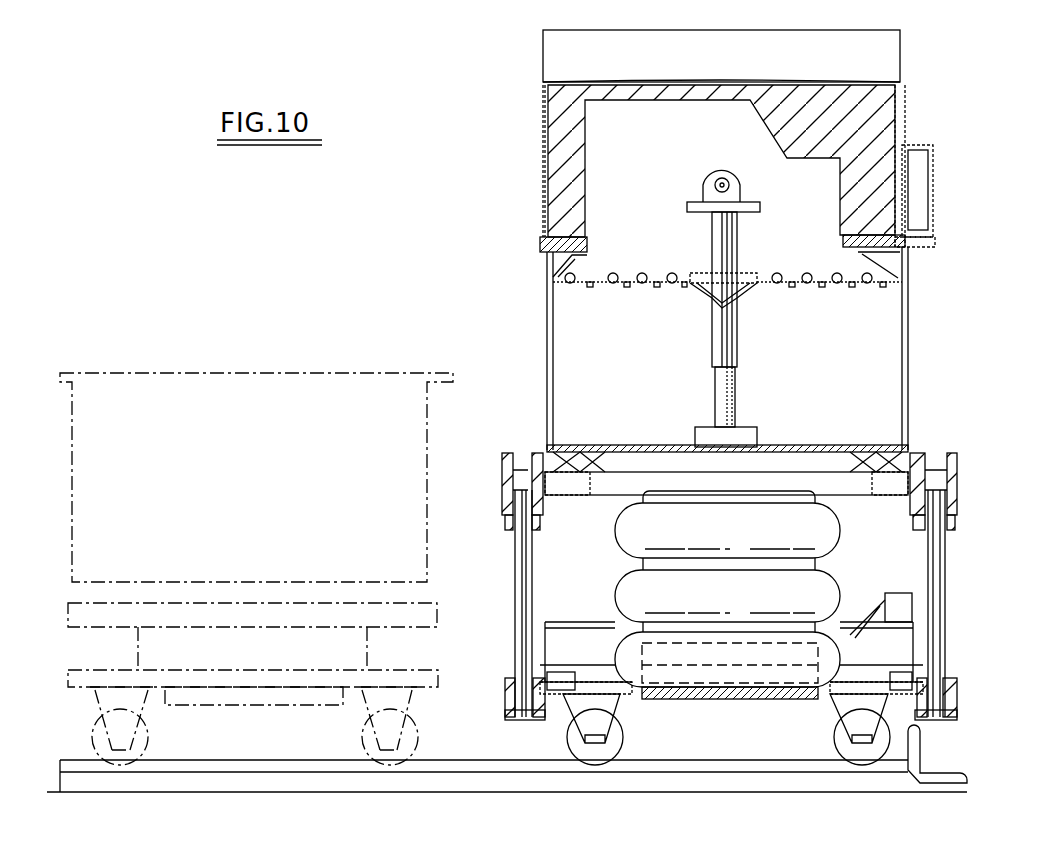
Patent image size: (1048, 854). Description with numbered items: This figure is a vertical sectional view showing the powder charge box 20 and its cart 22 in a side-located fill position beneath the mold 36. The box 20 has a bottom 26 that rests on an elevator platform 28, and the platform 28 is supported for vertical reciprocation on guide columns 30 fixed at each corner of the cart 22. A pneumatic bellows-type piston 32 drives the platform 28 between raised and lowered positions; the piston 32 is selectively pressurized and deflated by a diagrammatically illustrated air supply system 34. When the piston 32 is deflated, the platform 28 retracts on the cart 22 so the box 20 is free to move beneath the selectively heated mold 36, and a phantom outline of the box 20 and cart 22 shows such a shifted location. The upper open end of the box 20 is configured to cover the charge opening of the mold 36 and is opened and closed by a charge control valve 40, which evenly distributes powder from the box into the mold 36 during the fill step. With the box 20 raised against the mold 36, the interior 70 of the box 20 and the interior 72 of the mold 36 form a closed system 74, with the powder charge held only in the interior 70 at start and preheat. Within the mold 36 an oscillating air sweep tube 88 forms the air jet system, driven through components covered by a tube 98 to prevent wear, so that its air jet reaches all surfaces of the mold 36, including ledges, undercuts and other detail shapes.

The powder charge box 20 is at (910, 358).
The cart 22 is at (836, 700).
The bottom 26 is at (816, 447).
The elevator platform 28 is at (953, 490).
The guide columns 30 is at (525, 575).
The pneumatic bellows-type piston 32 is at (842, 532).
The air supply system 34 is at (896, 600).
The mold 36 is at (910, 115).
The charge control valve 40 is at (836, 288).
The interior of box 70 is at (815, 380).
The interior of mold 72 is at (666, 160).
The closed system 74 is at (540, 235).
The oscillating air sweep tube 88 is at (730, 185).
The tube 98 is at (712, 368).